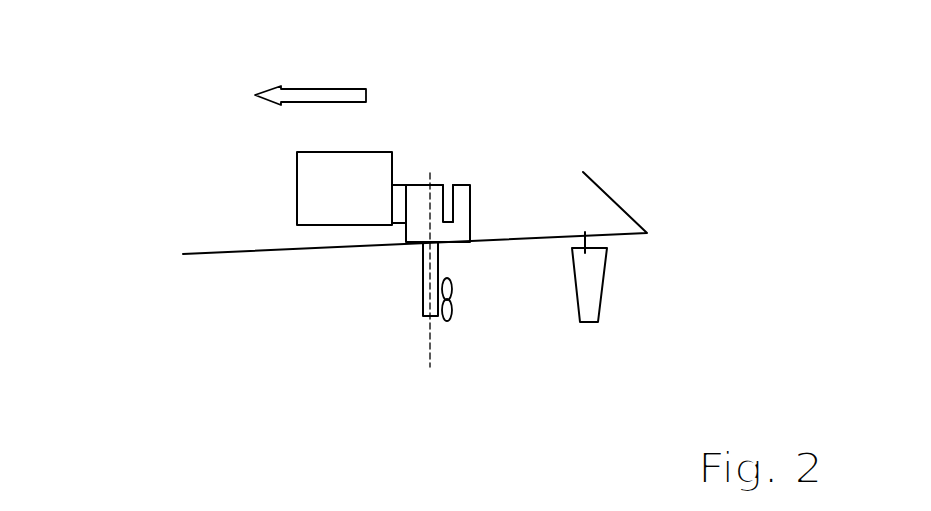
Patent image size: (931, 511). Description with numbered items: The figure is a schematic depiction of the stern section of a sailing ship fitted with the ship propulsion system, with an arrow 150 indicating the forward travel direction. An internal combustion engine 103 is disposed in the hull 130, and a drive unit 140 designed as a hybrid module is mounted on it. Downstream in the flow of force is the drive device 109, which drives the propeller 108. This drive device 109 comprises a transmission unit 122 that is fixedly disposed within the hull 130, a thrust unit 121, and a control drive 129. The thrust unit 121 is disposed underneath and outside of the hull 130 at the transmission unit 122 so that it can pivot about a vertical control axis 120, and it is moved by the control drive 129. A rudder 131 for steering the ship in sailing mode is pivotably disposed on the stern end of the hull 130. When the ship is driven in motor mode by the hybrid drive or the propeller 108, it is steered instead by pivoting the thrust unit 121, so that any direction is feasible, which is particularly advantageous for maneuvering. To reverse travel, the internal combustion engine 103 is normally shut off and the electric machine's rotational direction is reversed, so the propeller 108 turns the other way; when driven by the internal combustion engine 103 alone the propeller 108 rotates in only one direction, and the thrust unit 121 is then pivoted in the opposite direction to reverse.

The internal combustion engine 103 is at (318, 195).
The propeller 108 is at (452, 312).
The drive device 109 is at (438, 175).
The vertical control axis 120 is at (430, 337).
The thrust unit 121 is at (423, 276).
The transmission unit 122 is at (417, 218).
The control drive 129 is at (463, 210).
The hull 130 is at (211, 255).
The rudder 131 is at (590, 305).
The drive unit 140 is at (401, 195).
The arrow 150 is at (313, 97).